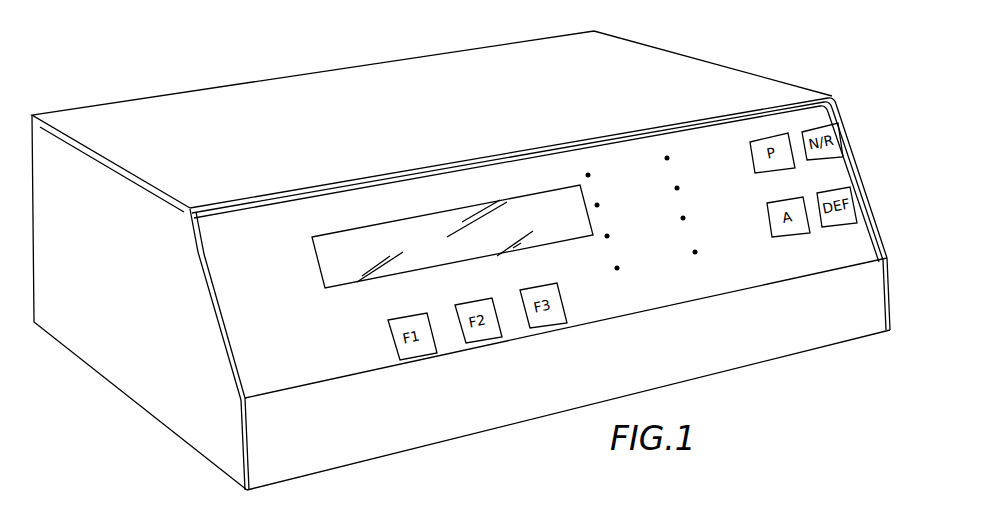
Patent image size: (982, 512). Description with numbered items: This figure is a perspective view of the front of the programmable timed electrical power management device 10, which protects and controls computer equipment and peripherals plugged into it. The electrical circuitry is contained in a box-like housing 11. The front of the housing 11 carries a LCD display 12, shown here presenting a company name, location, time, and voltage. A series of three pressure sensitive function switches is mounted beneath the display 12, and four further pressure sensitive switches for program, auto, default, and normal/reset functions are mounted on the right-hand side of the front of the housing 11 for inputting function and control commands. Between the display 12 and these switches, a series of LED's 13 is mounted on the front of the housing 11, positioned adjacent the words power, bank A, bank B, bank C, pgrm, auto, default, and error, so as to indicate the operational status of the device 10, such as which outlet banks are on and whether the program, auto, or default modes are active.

The programmable timed electrical power management device 10 is at (385, 60).
The housing 11 is at (681, 62).
The LCD display 12 is at (452, 226).
The LED's 13 is at (597, 205).